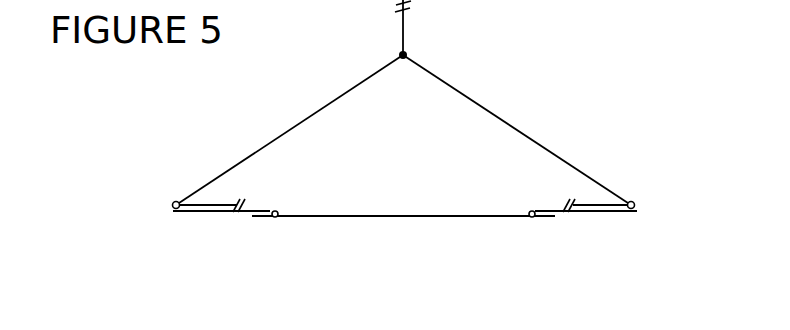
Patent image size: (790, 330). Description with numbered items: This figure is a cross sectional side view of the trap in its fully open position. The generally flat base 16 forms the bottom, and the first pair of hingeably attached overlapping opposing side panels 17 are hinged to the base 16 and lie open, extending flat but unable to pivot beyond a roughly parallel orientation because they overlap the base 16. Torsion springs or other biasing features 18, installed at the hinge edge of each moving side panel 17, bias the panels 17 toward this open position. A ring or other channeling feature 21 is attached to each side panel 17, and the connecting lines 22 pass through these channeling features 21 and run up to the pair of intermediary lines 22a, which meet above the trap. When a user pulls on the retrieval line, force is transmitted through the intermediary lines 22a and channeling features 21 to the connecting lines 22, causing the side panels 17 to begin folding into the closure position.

The base 16 is at (343, 218).
The side panels 17 is at (220, 213).
The torsion springs or other biasing features 18 is at (275, 218).
The channeling feature 21 is at (173, 201).
The connecting lines 22 is at (302, 120).
The intermediary lines 22a is at (405, 35).